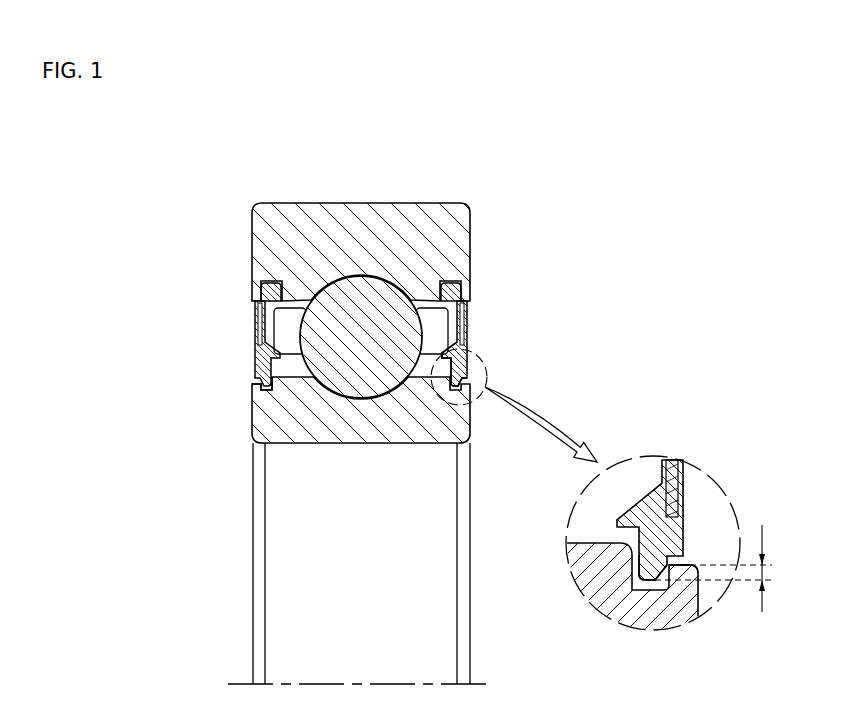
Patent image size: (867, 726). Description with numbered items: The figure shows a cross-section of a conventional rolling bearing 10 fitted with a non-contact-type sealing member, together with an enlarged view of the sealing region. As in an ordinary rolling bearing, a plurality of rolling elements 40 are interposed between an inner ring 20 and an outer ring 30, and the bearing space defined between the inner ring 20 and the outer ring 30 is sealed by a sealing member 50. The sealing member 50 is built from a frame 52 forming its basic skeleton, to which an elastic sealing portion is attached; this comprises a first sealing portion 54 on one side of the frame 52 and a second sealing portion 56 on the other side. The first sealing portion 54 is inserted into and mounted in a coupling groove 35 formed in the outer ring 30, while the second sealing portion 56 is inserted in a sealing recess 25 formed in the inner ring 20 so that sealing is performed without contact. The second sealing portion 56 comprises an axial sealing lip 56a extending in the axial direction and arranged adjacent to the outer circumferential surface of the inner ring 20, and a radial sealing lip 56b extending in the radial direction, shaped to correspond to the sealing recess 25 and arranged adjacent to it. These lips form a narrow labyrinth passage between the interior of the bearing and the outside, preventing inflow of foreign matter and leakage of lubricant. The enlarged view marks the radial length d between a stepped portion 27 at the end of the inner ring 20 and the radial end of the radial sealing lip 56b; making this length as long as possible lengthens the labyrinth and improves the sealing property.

The rolling bearing 10 is at (532, 120).
The inner ring 20 is at (314, 433).
The sealing recess 25 is at (258, 398).
The stepped portion 27 is at (683, 530).
The outer ring 30 is at (386, 222).
The coupling groove 35 is at (280, 288).
The rolling elements 40 is at (324, 333).
The sealing member 50 is at (468, 313).
The frame 52 is at (466, 330).
The first sealing portion 54 is at (462, 277).
The second sealing portion 56 is at (467, 363).
The axial sealing lip 56a is at (622, 502).
The radial sealing lip 56b is at (632, 582).
The radial length d is at (711, 568).